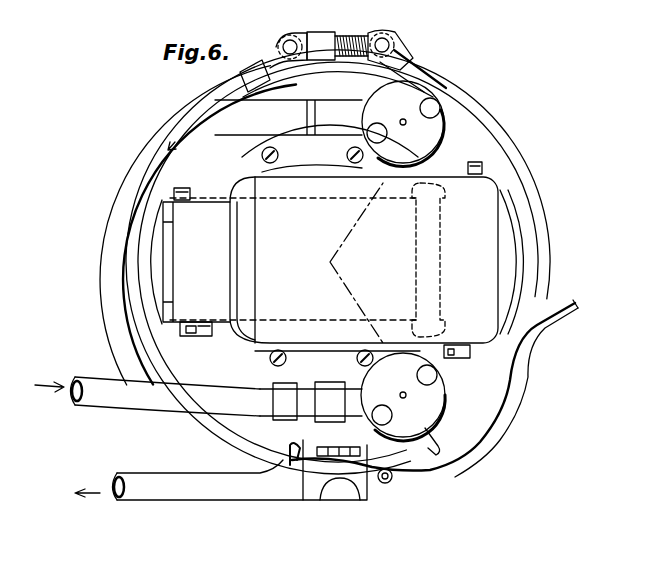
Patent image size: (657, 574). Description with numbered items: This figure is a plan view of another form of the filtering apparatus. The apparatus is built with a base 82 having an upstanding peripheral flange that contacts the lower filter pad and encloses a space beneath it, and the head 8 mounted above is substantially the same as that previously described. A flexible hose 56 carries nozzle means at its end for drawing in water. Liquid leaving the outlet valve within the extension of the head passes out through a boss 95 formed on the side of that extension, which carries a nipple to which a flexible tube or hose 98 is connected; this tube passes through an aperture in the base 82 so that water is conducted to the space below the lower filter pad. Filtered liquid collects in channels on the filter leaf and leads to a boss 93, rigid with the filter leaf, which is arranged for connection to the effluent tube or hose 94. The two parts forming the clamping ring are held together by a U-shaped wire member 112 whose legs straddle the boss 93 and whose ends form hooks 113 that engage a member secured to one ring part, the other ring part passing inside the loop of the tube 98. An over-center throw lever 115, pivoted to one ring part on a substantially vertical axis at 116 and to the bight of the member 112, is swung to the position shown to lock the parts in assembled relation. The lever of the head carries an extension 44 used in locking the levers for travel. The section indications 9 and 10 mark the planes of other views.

The head 8 is at (338, 262).
The section line 9- 9 is at (590, 262).
The section line 10-10 / cam 10 is at (282, 111).
The extension 44 is at (205, 322).
The flexible hose 56 is at (105, 402).
The base 82 is at (520, 156).
The boss 93 is at (340, 483).
The effluent tube or hose 94 is at (172, 492).
The boss 95 is at (337, 127).
The flexible tube or hose 98 is at (122, 187).
The U-shaped wire member 112 is at (312, 500).
The hooks 113 is at (290, 465).
The lever 115 is at (515, 408).
The pivot 116 is at (393, 473).